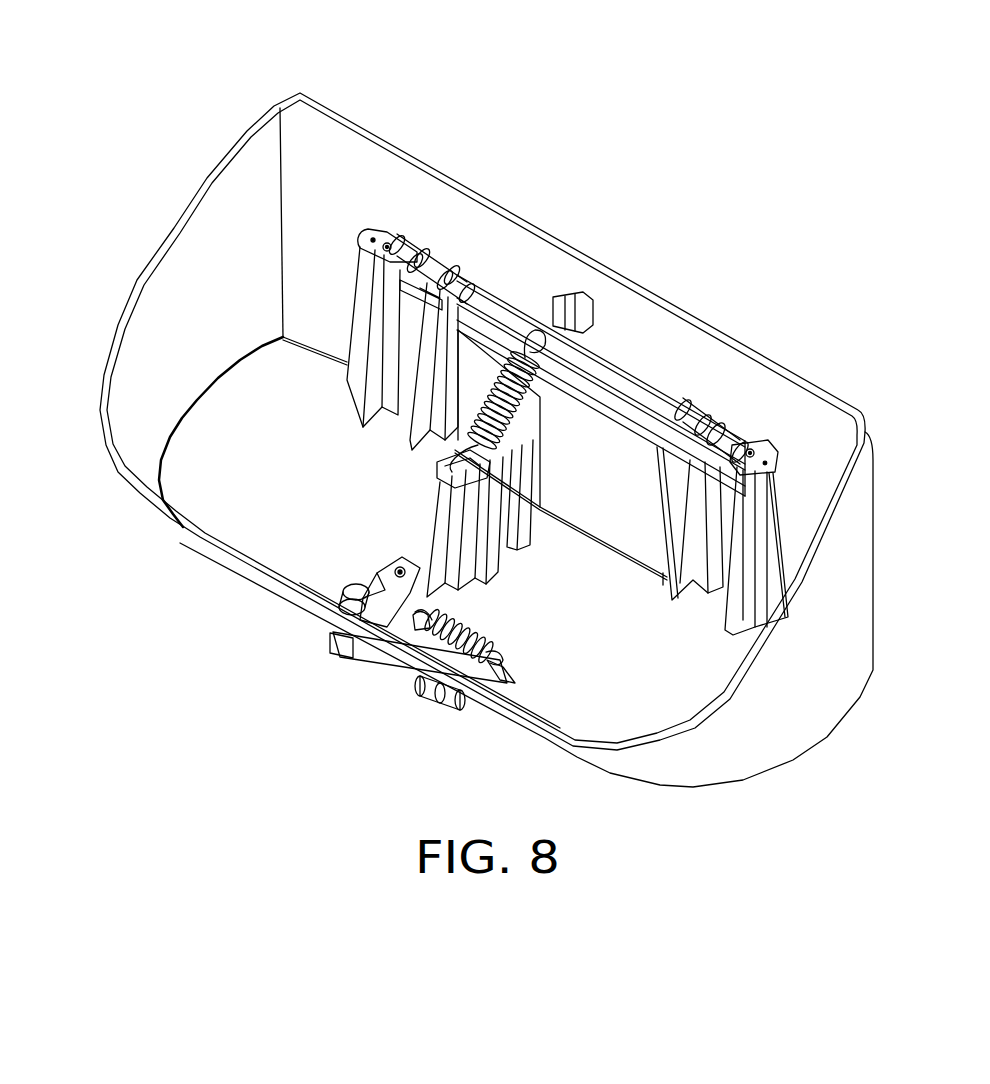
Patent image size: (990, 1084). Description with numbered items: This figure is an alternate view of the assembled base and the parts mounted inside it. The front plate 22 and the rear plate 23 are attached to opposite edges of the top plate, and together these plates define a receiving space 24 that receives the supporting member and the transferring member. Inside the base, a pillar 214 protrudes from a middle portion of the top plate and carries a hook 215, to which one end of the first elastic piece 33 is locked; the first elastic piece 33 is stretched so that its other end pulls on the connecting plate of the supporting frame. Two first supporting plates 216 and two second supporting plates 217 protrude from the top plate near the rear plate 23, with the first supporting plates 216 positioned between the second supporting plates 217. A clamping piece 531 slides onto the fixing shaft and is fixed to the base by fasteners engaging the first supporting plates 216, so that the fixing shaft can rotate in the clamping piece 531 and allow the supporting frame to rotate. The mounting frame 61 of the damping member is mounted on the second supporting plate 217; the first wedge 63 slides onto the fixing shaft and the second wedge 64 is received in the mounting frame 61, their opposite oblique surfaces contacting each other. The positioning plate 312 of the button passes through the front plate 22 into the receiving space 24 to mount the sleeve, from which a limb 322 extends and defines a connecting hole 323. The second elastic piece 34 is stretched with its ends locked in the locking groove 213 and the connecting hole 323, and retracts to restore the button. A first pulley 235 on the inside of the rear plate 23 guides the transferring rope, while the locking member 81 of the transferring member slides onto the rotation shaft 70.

The front plate 22 is at (207, 546).
The rear plate 23 is at (380, 131).
The receiving space 24 is at (255, 412).
The first elastic piece 33 is at (512, 350).
The second elastic piece 34 is at (505, 640).
The mounting frame 61 is at (760, 453).
The first wedge 63 is at (713, 440).
The second wedge 64 is at (703, 423).
The rotation shaft 70 is at (350, 628).
The locking member 81 is at (413, 683).
The locking groove 213 is at (493, 670).
The pillar 214 is at (442, 533).
The hook 215 is at (437, 470).
The first supporting plates 216 is at (700, 587).
The second supporting plates 217 is at (753, 550).
The first pulley 235 is at (571, 303).
The positioning plate 312 is at (343, 617).
The limb 322 is at (407, 615).
The connecting hole 323 is at (423, 622).
The clamping piece 531 is at (683, 410).